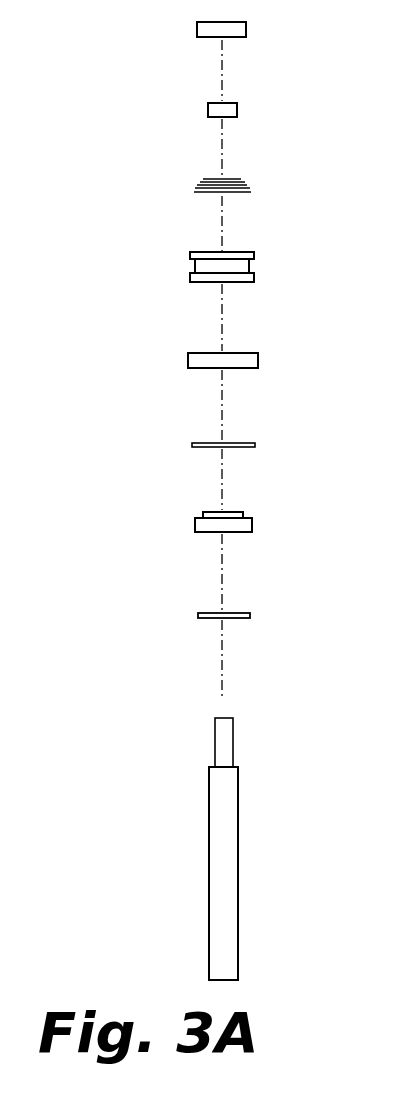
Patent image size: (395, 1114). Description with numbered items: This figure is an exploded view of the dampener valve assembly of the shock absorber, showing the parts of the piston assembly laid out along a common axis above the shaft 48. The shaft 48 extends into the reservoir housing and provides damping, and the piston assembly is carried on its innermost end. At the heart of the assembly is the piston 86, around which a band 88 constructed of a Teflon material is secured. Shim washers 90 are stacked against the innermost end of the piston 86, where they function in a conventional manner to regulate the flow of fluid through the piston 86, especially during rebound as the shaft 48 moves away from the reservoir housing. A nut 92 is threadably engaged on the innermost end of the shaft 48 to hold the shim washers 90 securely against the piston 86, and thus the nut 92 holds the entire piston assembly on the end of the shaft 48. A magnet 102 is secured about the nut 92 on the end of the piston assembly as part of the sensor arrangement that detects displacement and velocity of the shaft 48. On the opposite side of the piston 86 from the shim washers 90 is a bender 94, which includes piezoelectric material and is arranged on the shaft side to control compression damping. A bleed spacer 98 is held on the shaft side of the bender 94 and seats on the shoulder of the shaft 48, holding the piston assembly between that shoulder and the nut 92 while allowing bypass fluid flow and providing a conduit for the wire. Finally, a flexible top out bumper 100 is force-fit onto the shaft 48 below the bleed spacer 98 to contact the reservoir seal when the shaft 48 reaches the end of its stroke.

The magnet 102 is at (197, 30).
The nut 92 is at (208, 110).
The shim washers 90 is at (184, 173).
The piston 86 is at (196, 265).
The band 88 is at (190, 358).
The bender 94 is at (192, 445).
The bleed spacer 98 is at (196, 522).
The top out bumper 100 is at (198, 616).
The shaft 48 is at (213, 778).